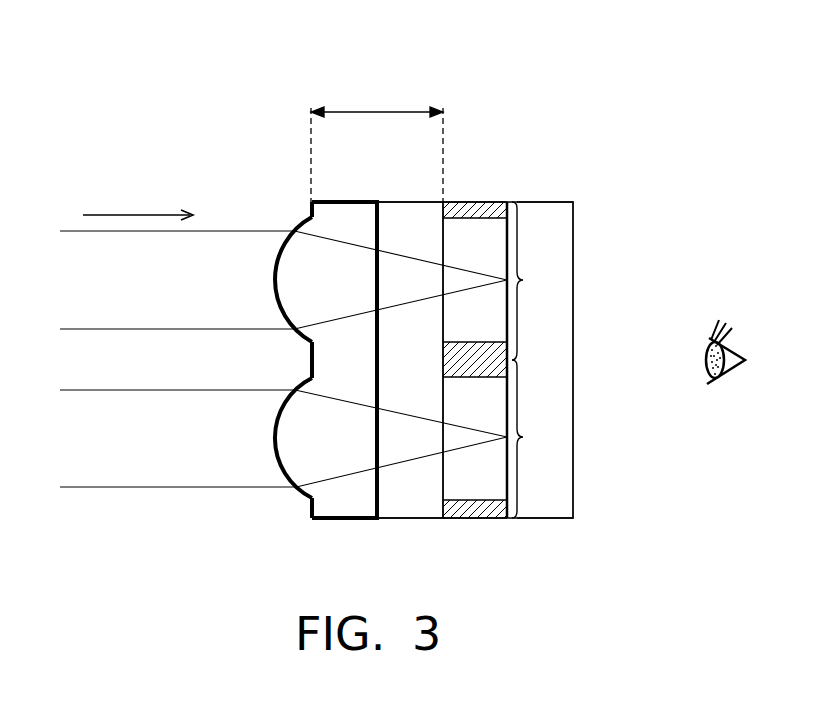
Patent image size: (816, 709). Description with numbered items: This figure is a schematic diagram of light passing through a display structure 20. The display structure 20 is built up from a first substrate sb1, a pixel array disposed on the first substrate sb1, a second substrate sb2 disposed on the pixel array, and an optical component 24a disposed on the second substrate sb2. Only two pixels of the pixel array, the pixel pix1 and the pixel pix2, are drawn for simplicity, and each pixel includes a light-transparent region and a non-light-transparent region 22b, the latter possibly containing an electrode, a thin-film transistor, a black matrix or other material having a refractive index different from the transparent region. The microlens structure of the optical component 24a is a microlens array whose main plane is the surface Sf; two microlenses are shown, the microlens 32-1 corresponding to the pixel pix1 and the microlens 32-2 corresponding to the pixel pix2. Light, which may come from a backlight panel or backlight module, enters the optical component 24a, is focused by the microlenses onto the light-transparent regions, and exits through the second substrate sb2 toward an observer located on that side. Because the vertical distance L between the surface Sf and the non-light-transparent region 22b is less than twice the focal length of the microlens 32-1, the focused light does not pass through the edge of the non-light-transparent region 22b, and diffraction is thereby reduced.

The display structure 20 is at (662, 538).
The optical component 24a is at (284, 321).
The non-light-transparent region 22b is at (478, 201).
The first substrate sb1 is at (540, 201).
The second substrate sb2 is at (408, 519).
The surface Sf is at (310, 214).
The microlens 32-1 is at (241, 264).
The microlens 32-2 is at (274, 440).
The pixel pix1 is at (523, 280).
The pixel pix2 is at (523, 437).
The vertical distance L is at (377, 142).
The element light is at (138, 198).